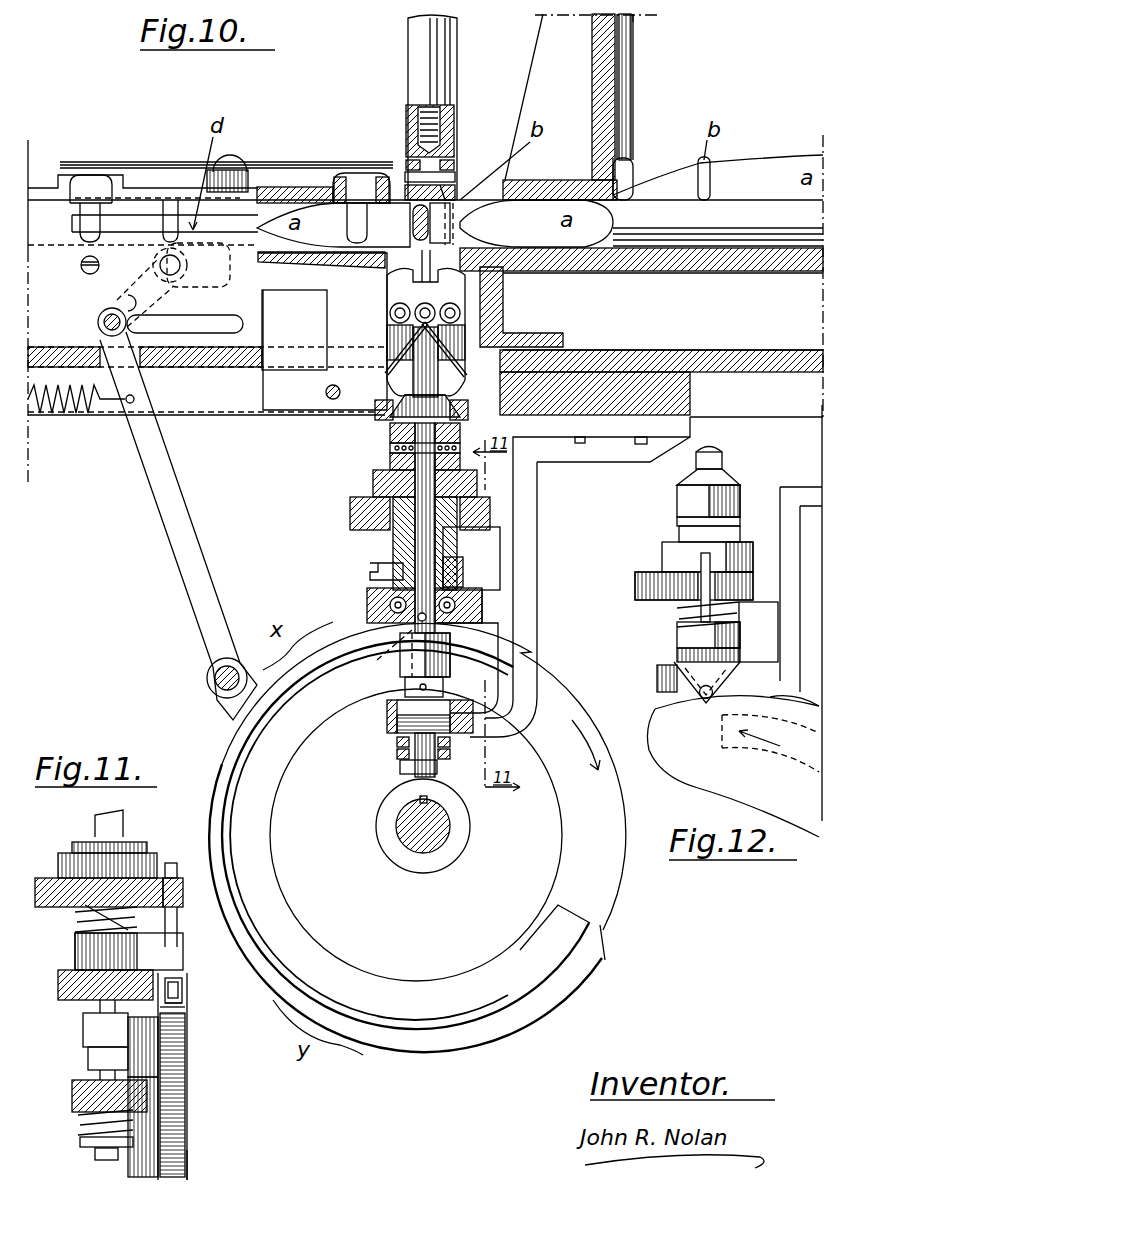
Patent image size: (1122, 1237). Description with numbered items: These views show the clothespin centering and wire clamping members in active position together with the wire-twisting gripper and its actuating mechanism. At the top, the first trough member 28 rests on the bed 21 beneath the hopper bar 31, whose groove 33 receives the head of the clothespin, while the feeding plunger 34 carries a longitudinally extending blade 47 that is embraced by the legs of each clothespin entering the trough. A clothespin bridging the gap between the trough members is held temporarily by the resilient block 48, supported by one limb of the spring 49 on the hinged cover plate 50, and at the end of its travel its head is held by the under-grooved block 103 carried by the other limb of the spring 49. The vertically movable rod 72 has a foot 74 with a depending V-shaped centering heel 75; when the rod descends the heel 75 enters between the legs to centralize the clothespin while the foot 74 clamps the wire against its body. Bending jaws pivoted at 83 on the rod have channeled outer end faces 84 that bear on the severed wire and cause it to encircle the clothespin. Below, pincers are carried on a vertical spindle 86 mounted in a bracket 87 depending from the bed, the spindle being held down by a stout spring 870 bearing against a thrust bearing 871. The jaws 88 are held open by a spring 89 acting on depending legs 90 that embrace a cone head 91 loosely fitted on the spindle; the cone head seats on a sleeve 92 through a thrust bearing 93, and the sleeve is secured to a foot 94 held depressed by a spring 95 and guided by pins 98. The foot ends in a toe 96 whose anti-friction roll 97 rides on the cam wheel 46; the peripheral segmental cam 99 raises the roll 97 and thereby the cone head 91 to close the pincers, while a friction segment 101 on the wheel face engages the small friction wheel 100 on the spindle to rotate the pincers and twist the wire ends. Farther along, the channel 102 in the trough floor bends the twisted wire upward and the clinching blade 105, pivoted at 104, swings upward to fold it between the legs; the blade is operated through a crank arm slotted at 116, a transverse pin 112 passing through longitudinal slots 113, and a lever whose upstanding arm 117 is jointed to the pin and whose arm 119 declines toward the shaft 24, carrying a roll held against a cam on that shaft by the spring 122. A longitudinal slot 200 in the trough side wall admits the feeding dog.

In FIG. 10, the rod 72 is at (408, 47).
In FIG. 10, the resilient block 48 is at (353, 187).
In FIG. 10, the foot portion 74 is at (410, 160).
In FIG. 10, the pivot 83 is at (455, 178).
In FIG. 10, the V-shaped centering heel 75 is at (458, 197).
In FIG. 10, the hopper bar 31 is at (582, 97).
In FIG. 10, the groove 33 is at (635, 22).
In FIG. 10, the plunger blade 47 is at (605, 205).
In FIG. 10, the plunger 34 is at (641, 239).
In FIG. 10, the trough member 28 is at (663, 310).
In FIG. 10, the bed 21 is at (780, 358).
In FIG. 10, the under-grooved block 103 is at (80, 172).
In FIG. 10, the spring 49 is at (160, 162).
In FIG. 10, the longitudinal slot 200 is at (230, 217).
In FIG. 10, the hinged cover plate 50 is at (300, 188).
In FIG. 10, the longitudinal slot 116 is at (115, 297).
In FIG. 10, the transverse pin 112 is at (104, 322).
In FIG. 10, the pivot pin 104 is at (168, 268).
In FIG. 10, the blade 105 is at (239, 277).
In FIG. 10, the channel 102 is at (322, 331).
In FIG. 10, the longitudinal slots 113 is at (190, 337).
In FIG. 10, the spring 122 is at (77, 420).
In FIG. 10, the upstanding arm 117 is at (167, 530).
In FIG. 10, the lever arm 119 is at (222, 715).
In FIG. 10, the outer end faces 84 is at (445, 240).
In FIG. 10, the jaws 88 is at (452, 284).
In FIG. 10, the spring 89 is at (445, 340).
In FIG. 10, the depending legs 90 is at (455, 378).
In FIG. 10, the cone head 91 is at (395, 405).
In FIG. 12, the cone head 91 is at (740, 477).
In FIG. 10, the thrust bearing 93 is at (392, 453).
In FIG. 12, the thrust bearing 93 is at (671, 524).
In FIG. 10, the vertical spindle 86 is at (423, 476).
In FIG. 12, the vertical spindle 86 is at (722, 455).
In FIG. 11, the vertical spindle 86 is at (93, 820).
In FIG. 10, the sleeve 92 is at (352, 511).
In FIG. 12, the sleeve 92 is at (722, 615).
In FIG. 11, the sleeve 92 is at (143, 913).
In FIG. 10, the spring 95 is at (386, 548).
In FIG. 12, the spring 95 is at (679, 616).
In FIG. 11, the spring 95 is at (76, 927).
In FIG. 10, the foot 94 is at (476, 569).
In FIG. 12, the foot 94 is at (679, 635).
In FIG. 11, the foot 94 is at (178, 960).
In FIG. 10, the anti-friction roll 97 is at (381, 656).
In FIG. 12, the anti-friction roll 97 is at (705, 701).
In FIG. 11, the anti-friction roll 97 is at (178, 990).
In FIG. 10, the friction wheel 100 is at (460, 658).
In FIG. 11, the friction wheel 100 is at (74, 1036).
In FIG. 10, the thrust bearing 871 is at (390, 730).
In FIG. 10, the stout spring 870 is at (397, 750).
In FIG. 11, the stout spring 870 is at (82, 1134).
In FIG. 10, the bracket 87 is at (508, 727).
In FIG. 12, the bracket 87 is at (657, 677).
In FIG. 11, the bracket 87 is at (48, 868).
In FIG. 10, the friction segment 101 is at (262, 826).
In FIG. 12, the friction segment 101 is at (772, 758).
In FIG. 11, the friction segment 101 is at (155, 1142).
In FIG. 10, the shaft 24 is at (437, 847).
In FIG. 10, the cam wheel 46 is at (416, 835).
In FIG. 12, the cam wheel 46 is at (707, 766).
In FIG. 11, the cam wheel 46 is at (187, 1168).
In FIG. 10, the segmental cam 99 is at (453, 1043).
In FIG. 12, the segmental cam 99 is at (773, 705).
In FIG. 11, the segmental cam 99 is at (180, 1008).
In FIG. 12, the guide pin 98 is at (709, 588).
In FIG. 11, the guide pin 98 is at (173, 862).
In FIG. 12, the toe 96 is at (708, 664).
In FIG. 11, the toe 96 is at (182, 1002).